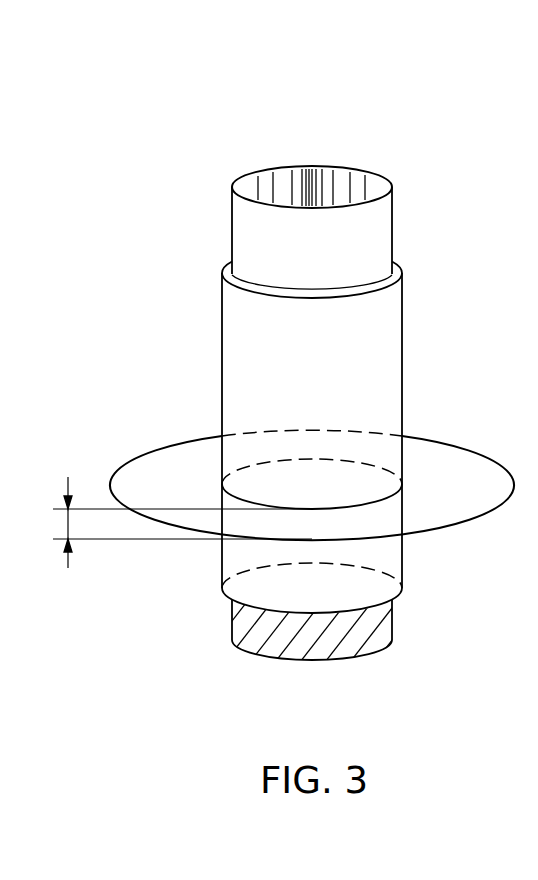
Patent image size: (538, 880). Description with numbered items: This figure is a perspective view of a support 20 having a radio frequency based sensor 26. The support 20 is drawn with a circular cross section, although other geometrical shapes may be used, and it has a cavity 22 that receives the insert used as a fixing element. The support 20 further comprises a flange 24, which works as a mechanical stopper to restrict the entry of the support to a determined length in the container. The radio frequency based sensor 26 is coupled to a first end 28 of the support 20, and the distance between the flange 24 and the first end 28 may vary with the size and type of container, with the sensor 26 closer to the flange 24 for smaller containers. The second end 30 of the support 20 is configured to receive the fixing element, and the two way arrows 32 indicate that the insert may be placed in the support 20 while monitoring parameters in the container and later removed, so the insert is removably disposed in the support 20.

The support 20 is at (393, 368).
The cavity 22 is at (368, 192).
The flange 24 is at (182, 450).
The radio frequency based sensor 26 is at (236, 622).
The first end 28 is at (357, 594).
The second end 30 is at (250, 188).
The two way arrows 32 is at (67, 526).